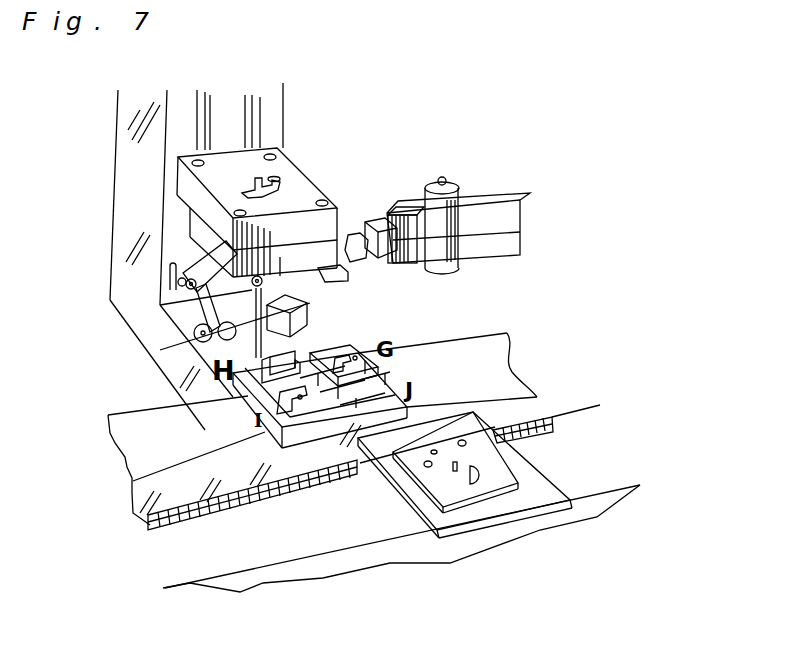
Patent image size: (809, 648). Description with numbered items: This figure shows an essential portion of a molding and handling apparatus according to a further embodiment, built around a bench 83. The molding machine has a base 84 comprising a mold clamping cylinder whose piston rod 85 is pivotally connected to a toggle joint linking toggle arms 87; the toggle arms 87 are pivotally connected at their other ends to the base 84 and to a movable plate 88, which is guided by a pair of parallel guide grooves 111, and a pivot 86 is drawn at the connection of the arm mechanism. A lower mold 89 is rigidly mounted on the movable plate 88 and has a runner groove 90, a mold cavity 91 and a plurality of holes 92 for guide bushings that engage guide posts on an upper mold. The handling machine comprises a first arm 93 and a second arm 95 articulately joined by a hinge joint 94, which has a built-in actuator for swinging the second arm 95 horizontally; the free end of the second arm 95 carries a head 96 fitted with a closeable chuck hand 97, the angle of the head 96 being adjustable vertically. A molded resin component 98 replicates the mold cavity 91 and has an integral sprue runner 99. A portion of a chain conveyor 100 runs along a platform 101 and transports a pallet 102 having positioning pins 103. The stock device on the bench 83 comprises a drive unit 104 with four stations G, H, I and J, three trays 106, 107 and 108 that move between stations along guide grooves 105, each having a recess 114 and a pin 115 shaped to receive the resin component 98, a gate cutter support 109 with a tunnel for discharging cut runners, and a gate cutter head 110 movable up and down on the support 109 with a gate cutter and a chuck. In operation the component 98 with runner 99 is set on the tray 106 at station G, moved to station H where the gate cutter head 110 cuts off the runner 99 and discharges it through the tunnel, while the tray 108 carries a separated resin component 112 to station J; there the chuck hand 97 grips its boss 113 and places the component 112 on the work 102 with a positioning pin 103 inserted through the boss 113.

The bench 83 is at (130, 424).
The base of the molding machine 84 is at (160, 350).
The piston rod 85 is at (165, 268).
The pivot 86 is at (182, 282).
The toggle arms 87 is at (203, 272).
The movable plate 88 is at (186, 198).
The lower mold 89 is at (183, 178).
The runner groove 90 is at (323, 205).
The mold cavity 91 is at (268, 180).
The holes for guide bushings 92 is at (338, 262).
The first arm 93 is at (520, 207).
The hinge joint 94 is at (500, 197).
The second arm 95 is at (520, 228).
The head 96 is at (432, 190).
The chuck hand 97 is at (397, 220).
The molded resin component 98 is at (346, 257).
The sprue runner 99 is at (370, 230).
The chain conveyor 100 is at (540, 418).
The platform 101 is at (545, 492).
The pallet 102 is at (497, 477).
The positioning pins 103 is at (460, 460).
The drive unit 104 is at (250, 405).
The guide grooves 105 is at (383, 390).
The tray 106 is at (375, 335).
The tray 107 is at (248, 407).
The tray 108 is at (297, 400).
The gate cutter support 109 is at (252, 300).
The gate cutter head 110 is at (265, 340).
The guide grooves 111 is at (257, 112).
The resin component 112 is at (213, 510).
The boss 113 is at (303, 400).
The recess 114 is at (342, 347).
The pin 115 is at (353, 357).